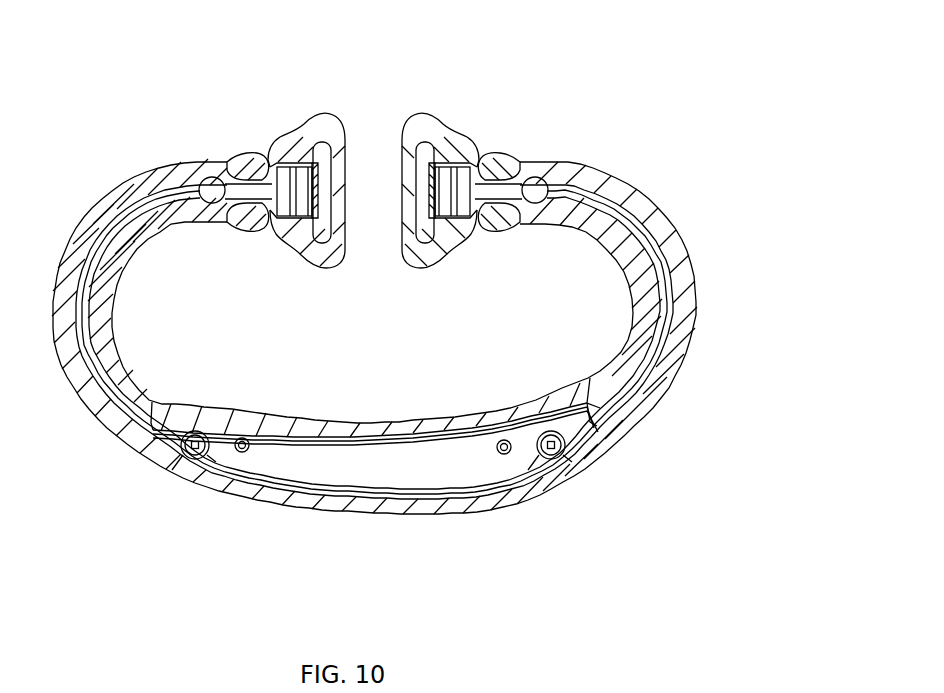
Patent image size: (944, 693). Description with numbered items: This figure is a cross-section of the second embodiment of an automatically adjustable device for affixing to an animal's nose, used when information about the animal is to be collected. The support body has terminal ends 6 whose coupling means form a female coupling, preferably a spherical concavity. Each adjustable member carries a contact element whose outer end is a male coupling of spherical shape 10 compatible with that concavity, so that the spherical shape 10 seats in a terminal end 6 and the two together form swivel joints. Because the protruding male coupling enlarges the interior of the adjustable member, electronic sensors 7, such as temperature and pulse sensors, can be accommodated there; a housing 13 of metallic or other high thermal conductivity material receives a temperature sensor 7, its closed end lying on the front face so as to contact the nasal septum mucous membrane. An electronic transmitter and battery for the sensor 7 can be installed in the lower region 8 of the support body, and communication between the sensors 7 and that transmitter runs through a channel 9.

The terminal ends 6 is at (493, 162).
The electronic sensors 7 is at (423, 180).
The lower region 8 is at (390, 470).
The channel 9 is at (667, 282).
The spherical shape 10 is at (248, 173).
The housing 13 is at (428, 147).